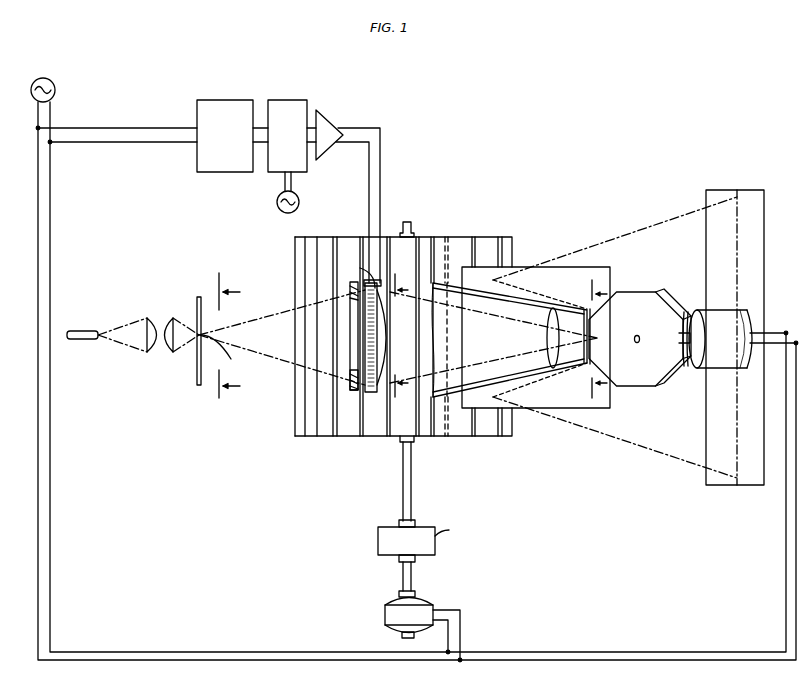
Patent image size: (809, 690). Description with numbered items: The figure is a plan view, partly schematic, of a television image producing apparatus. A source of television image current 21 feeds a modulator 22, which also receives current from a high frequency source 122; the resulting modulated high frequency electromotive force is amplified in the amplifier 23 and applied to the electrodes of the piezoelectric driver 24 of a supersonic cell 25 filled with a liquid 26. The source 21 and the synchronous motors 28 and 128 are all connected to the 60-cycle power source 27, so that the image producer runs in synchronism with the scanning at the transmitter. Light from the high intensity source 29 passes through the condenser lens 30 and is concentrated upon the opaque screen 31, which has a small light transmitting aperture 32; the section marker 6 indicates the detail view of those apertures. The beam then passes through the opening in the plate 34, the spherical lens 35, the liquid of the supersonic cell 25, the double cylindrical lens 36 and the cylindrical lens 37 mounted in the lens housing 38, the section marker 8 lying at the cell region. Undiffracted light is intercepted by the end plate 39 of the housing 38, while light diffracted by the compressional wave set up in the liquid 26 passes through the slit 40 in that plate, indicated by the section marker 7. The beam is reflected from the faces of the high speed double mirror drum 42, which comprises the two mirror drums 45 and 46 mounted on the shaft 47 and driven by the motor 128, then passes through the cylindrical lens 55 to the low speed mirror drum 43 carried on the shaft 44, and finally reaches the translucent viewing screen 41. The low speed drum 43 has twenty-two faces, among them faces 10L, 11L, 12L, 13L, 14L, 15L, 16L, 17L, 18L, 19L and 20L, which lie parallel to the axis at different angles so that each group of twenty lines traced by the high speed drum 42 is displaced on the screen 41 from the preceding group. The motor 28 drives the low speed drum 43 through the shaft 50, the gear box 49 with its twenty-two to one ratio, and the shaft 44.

The 60-cycle power source 27 is at (52, 86).
The 60 cycle supply 60 is at (56, 97).
The source of television image current 21 is at (233, 99).
The modulator 22 is at (295, 99).
The amplifier 23 is at (328, 117).
The high frequency source 122 is at (277, 202).
The mirror face of low speed mirror drum 10L is at (513, 238).
The mirror face of low speed mirror drum 11L is at (496, 237).
The mirror face of low speed mirror drum 12L is at (498, 437).
The mirror face of low speed mirror drum 13L is at (462, 228).
The mirror face of low speed mirror drum 14L is at (440, 437).
The mirror face of low speed mirror drum 15L is at (418, 237).
The mirror face of low speed mirror drum 16L is at (376, 437).
The mirror face of low speed mirror drum 17L is at (355, 229).
The mirror face of low speed mirror drum 18L is at (326, 437).
The mirror face of low speed mirror drum 19L is at (315, 229).
The mirror face of low speed mirror drum 20L is at (298, 437).
The piezoelectric driver 24 is at (357, 272).
The supersonic cell 25 is at (371, 393).
The liquid 26 is at (382, 325).
The plate 34 is at (353, 391).
The spherical lens 35 is at (360, 320).
The double cylindrical lens 36 is at (384, 352).
The section marker 8 is at (401, 337).
The cylindrical lens 55 is at (541, 409).
The lens housing 38 is at (516, 300).
The slit 40 is at (584, 330).
The end plate 39 is at (586, 350).
The cylindrical lens 37 is at (546, 347).
The section marker 7 is at (599, 339).
The high speed double mirror drum 42 is at (637, 292).
The mirror drum 45 is at (652, 386).
The mirror drum 46 is at (686, 370).
The shaft 47 is at (686, 312).
The synchronous motor 128 is at (750, 322).
The translucent viewing screen 41 is at (737, 190).
The high intensity light source 29 is at (88, 331).
The condenser lens 30 is at (159, 353).
The opaque screen 31 is at (197, 372).
The light transmitting aperture 32 is at (238, 356).
The section marker 6 is at (235, 335).
The low speed mirror drum 43 is at (403, 443).
The shaft 44 is at (410, 507).
The gear box 49 is at (436, 548).
The shaft 50 is at (412, 583).
The synchronous motor 28 is at (385, 612).